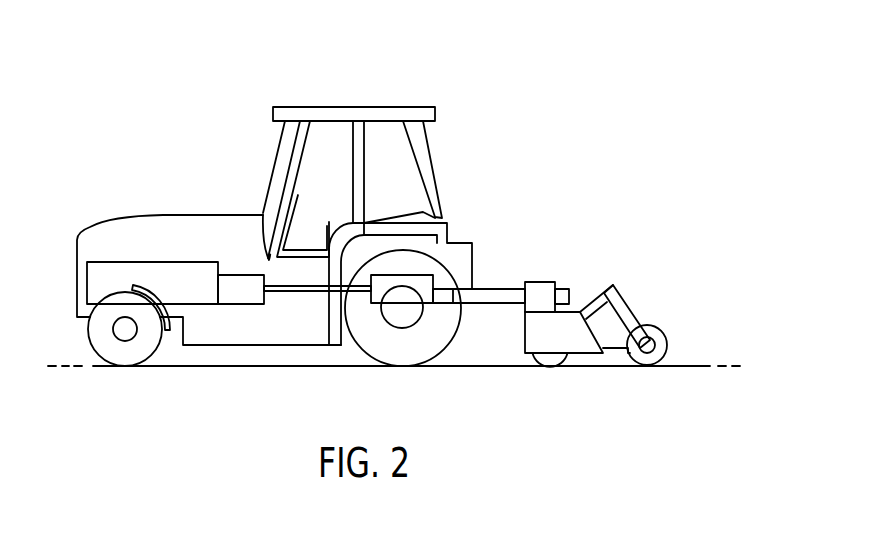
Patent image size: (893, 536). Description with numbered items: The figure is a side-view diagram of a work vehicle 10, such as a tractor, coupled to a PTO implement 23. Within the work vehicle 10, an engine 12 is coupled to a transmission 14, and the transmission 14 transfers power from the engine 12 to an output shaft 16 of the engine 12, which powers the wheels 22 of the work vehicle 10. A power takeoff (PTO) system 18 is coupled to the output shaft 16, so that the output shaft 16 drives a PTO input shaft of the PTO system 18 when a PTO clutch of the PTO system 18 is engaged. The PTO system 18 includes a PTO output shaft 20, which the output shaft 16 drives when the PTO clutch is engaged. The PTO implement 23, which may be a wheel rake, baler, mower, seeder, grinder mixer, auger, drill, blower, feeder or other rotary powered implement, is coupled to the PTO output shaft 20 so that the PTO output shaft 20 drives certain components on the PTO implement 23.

The work vehicle 10 is at (470, 56).
The engine 12 is at (152, 262).
The transmission 14 is at (242, 304).
The output shaft 16 is at (322, 291).
The power takeoff (PTO) system 18 is at (433, 280).
The PTO output shaft 20 is at (444, 302).
The wheels 22 is at (97, 339).
The PTO implement 23 is at (588, 266).